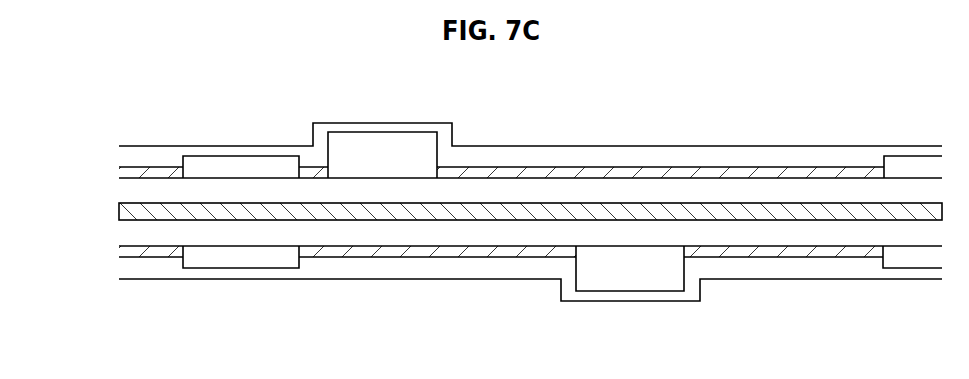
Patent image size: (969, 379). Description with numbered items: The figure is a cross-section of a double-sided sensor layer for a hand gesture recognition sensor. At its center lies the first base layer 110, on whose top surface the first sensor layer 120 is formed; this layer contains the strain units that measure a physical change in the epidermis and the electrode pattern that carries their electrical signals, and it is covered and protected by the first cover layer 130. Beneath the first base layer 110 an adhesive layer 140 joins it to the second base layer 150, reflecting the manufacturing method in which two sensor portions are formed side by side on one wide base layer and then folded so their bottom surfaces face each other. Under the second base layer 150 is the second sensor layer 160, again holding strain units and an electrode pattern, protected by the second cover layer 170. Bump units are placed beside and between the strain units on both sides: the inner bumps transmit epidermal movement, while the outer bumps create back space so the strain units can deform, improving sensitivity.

The first base layer 110 is at (137, 190).
The first sensor layer 120 is at (500, 136).
The first cover layer 130 is at (167, 157).
The adhesive layer 140 is at (143, 210).
The second base layer 150 is at (347, 240).
The second sensor layer 160 is at (500, 278).
The second cover layer 170 is at (435, 263).